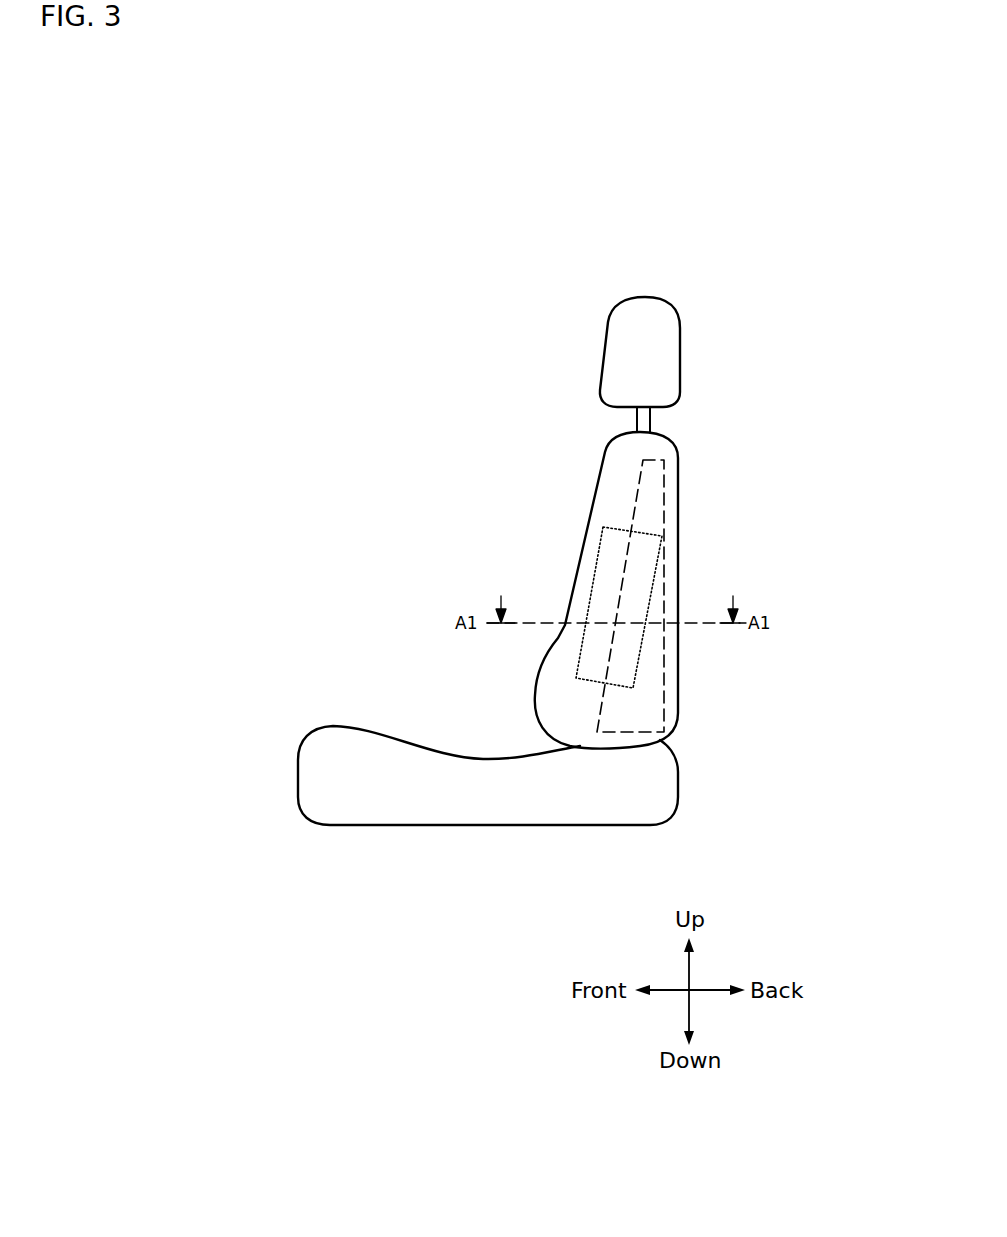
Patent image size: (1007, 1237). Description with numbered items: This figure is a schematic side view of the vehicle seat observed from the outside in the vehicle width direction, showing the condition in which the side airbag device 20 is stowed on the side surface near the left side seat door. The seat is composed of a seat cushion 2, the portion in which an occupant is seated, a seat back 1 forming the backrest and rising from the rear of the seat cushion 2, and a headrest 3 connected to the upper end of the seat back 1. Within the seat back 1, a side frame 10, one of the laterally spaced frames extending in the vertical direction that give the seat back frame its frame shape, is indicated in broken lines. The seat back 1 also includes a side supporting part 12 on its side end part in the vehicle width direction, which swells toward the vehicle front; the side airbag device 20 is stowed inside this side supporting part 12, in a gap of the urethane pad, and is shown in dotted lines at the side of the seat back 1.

The seat back 1 is at (680, 457).
The seat cushion 2 is at (340, 726).
The headrest 3 is at (680, 342).
The side frame 10 is at (664, 507).
The side supporting part 12 is at (582, 568).
The side airbag device 20 is at (637, 665).